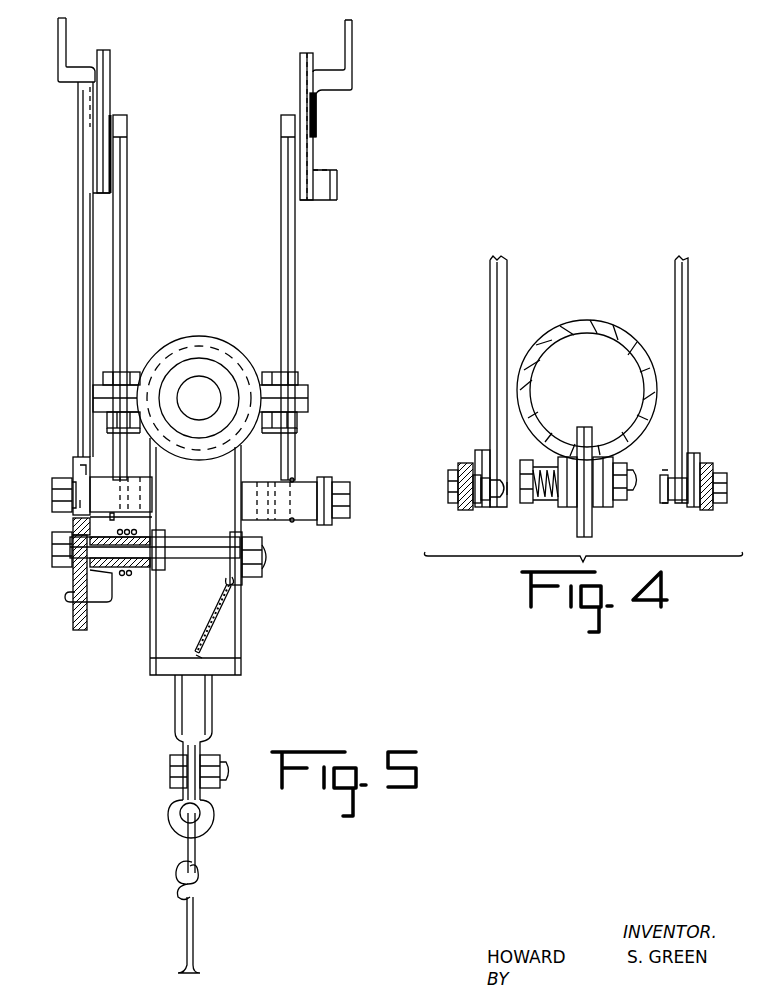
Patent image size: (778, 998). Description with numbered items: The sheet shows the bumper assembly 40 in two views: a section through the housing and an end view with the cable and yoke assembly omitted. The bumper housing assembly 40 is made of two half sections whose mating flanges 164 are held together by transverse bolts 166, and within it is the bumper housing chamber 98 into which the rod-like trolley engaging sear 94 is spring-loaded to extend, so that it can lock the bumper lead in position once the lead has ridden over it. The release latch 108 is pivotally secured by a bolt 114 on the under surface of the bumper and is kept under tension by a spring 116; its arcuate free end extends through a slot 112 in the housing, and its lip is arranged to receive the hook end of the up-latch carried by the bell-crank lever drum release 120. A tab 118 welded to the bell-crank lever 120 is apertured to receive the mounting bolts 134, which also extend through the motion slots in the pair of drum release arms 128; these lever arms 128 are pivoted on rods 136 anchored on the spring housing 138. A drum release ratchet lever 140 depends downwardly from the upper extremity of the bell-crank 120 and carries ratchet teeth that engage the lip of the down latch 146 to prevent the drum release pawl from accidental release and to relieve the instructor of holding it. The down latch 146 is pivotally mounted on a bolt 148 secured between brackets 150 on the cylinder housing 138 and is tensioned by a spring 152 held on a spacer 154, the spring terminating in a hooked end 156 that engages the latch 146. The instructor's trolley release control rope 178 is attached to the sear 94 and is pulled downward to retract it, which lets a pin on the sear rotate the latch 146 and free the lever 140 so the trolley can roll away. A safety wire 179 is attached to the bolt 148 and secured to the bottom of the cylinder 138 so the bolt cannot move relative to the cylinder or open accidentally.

In FIG. 5, the bumper assembly 40 is at (199, 394).
In FIG. 4, the bumper assembly 40 is at (590, 320).
In FIG. 5, the trolley engaging sear 94 is at (200, 697).
In FIG. 5, the bumper housing chamber 98 is at (232, 344).
In FIG. 4, the release latch 108 is at (585, 510).
In FIG. 4, the slot 112 is at (576, 456).
In FIG. 4, the bolt 114 is at (528, 485).
In FIG. 4, the spring 116 is at (550, 498).
In FIG. 4, the tab 118 is at (481, 452).
In FIG. 5, the bell-crank lever drum release 120 is at (294, 250).
In FIG. 4, the bell-crank lever drum release 120 is at (497, 298).
In FIG. 5, the drum release arms 128 is at (72, 468).
In FIG. 4, the drum release arms 128 is at (465, 463).
In FIG. 4, the mounting bolts 134 is at (460, 490).
In FIG. 5, the rods 136 is at (52, 497).
In FIG. 5, the spring housing 138 is at (234, 648).
In FIG. 5, the drum release ratchet lever 140 is at (86, 262).
In FIG. 5, the down latch 146 is at (73, 625).
In FIG. 5, the bolt 148 is at (195, 550).
In FIG. 5, the brackets 150 is at (165, 540).
In FIG. 5, the spring 152 is at (120, 535).
In FIG. 5, the spacer 154 is at (100, 570).
In FIG. 5, the hooked end 156 is at (113, 595).
In FIG. 5, the mating flanges 164 is at (309, 404).
In FIG. 5, the transverse bolts 166 is at (298, 378).
In FIG. 5, the trolley release control rope 178 is at (196, 926).
In FIG. 5, the safety wire 179 is at (228, 613).